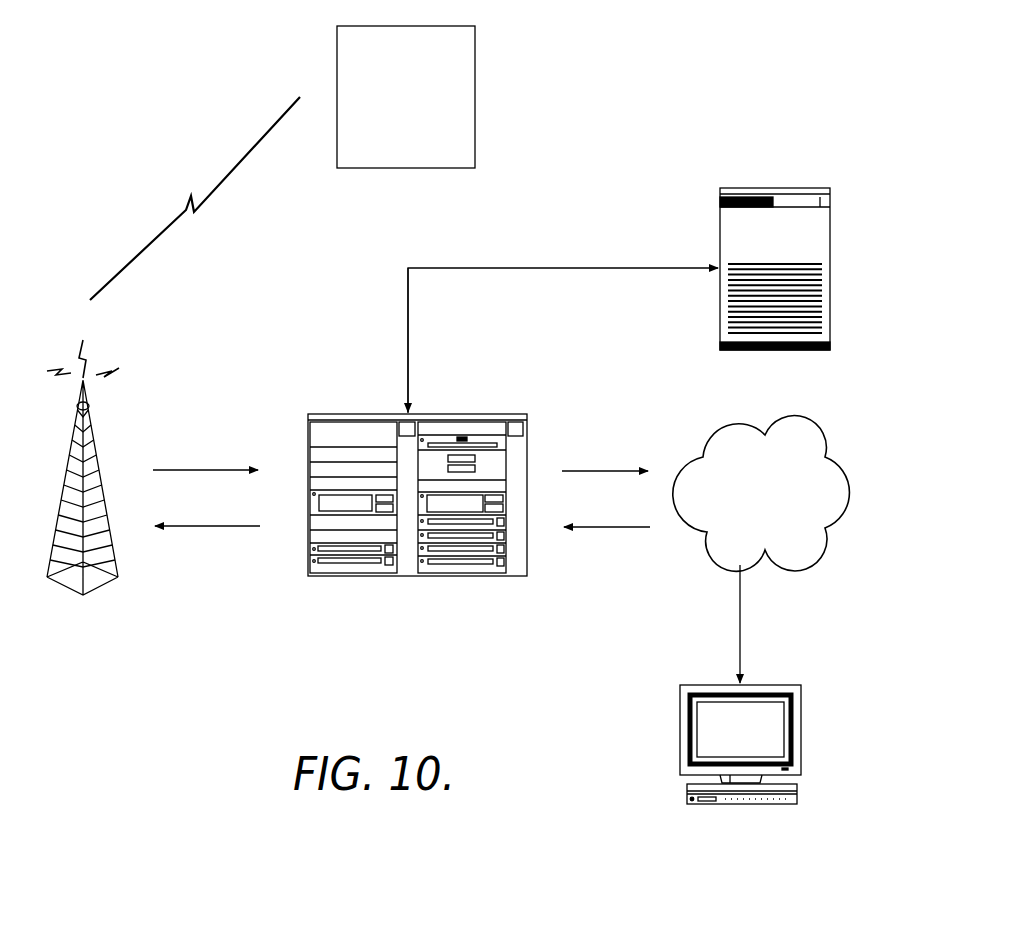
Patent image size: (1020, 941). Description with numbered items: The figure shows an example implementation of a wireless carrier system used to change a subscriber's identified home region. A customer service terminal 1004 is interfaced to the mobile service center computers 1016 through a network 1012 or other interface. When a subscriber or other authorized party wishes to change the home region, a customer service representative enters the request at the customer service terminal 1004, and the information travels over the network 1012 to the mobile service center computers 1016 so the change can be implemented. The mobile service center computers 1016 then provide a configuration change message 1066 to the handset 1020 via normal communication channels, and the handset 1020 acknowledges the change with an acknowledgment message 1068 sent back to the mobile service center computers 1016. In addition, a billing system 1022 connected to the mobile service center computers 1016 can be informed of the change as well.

The handset 1020 is at (475, 63).
The mobile service center computers 1016 is at (528, 432).
The billing system 1022 is at (830, 222).
The network 1012 is at (843, 463).
The customer service terminal 1004 is at (801, 703).
The acknowledgment message 1068 is at (205, 455).
The configuration change message 1066 is at (207, 511).